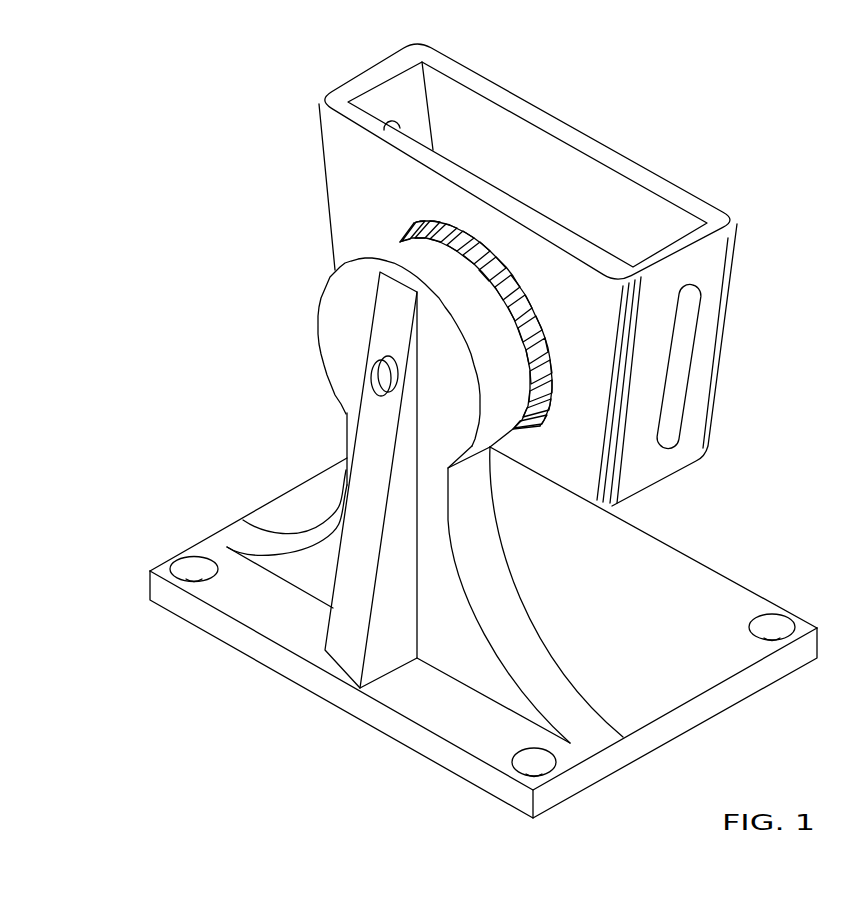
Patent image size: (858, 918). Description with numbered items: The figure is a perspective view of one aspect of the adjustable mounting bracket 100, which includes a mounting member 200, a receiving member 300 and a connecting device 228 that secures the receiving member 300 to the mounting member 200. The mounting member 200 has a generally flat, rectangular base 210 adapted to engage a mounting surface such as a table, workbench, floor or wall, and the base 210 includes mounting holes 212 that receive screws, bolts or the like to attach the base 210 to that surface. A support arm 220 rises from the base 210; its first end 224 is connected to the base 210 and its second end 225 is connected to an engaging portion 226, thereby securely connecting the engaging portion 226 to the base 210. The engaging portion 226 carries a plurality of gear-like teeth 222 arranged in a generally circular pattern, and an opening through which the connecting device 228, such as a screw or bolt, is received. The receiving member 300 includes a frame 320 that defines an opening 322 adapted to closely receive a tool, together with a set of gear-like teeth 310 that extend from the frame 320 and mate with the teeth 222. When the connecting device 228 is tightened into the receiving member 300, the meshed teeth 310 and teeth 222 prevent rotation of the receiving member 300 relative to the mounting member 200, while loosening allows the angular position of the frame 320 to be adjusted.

The adjustable mounting bracket 100 is at (252, 134).
The mounting member 200 is at (322, 427).
The base 210 is at (728, 700).
The mounting holes 212 is at (187, 566).
The support arm 220 is at (330, 653).
The gear-like teeth 222 is at (408, 241).
The first end 224 is at (432, 660).
The second end 225 is at (470, 503).
The engaging portion 226 is at (370, 330).
The connecting device 228 is at (376, 374).
The receiving member 300 is at (571, 110).
The gear-like teeth 310 is at (533, 322).
The frame 320 is at (666, 184).
The opening 322 is at (498, 128).